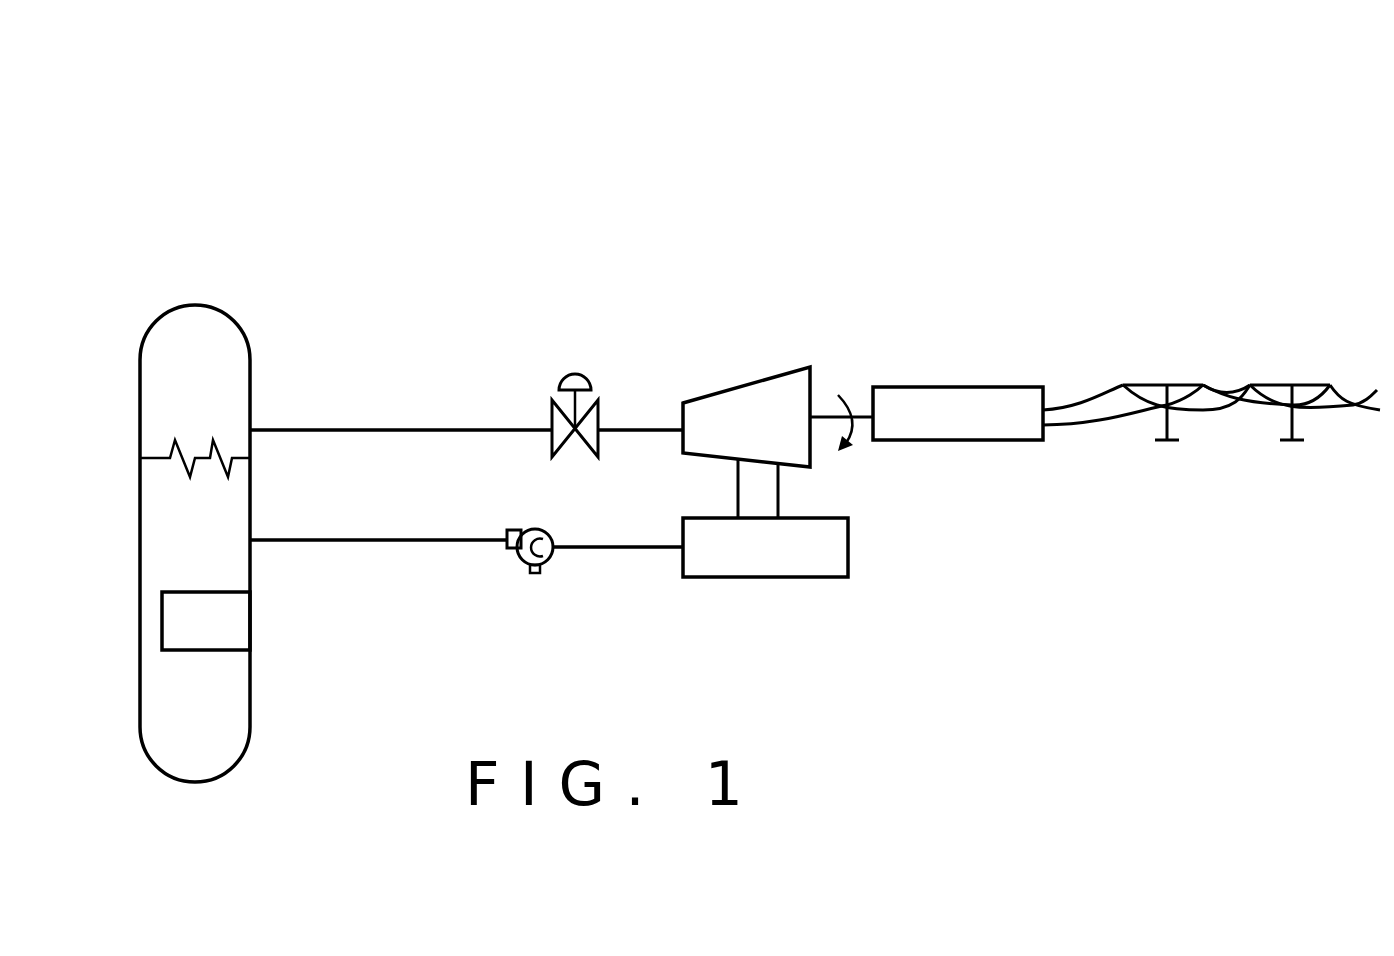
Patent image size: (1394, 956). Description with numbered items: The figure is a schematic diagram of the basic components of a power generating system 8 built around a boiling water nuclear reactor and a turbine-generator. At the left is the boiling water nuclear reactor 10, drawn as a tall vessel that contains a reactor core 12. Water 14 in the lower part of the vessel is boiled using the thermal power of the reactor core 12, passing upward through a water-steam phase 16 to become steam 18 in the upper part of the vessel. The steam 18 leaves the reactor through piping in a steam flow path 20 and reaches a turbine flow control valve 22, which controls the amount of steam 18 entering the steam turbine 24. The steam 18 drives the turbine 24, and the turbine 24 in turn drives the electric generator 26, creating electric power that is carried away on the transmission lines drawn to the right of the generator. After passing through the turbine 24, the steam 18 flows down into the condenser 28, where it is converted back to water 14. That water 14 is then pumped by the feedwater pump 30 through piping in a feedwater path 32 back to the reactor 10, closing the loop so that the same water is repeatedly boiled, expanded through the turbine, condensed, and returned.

The power generating system 8 is at (590, 186).
The boiling water nuclear reactor 10 is at (205, 255).
The reactor core 12 is at (162, 628).
The water 14 is at (142, 700).
The water-steam phase 16 is at (140, 531).
The steam 18 is at (140, 427).
The steam flow path 20 is at (327, 430).
The turbine flow control valve 22 is at (600, 412).
The steam turbine 24 is at (750, 380).
The electric generator 26 is at (948, 387).
The condenser 28 is at (770, 577).
The feedwater pump 30 is at (538, 575).
The feedwater path 32 is at (350, 540).